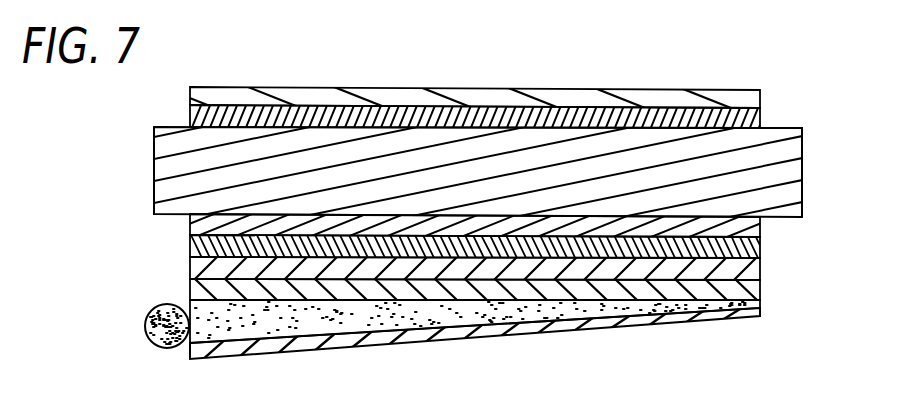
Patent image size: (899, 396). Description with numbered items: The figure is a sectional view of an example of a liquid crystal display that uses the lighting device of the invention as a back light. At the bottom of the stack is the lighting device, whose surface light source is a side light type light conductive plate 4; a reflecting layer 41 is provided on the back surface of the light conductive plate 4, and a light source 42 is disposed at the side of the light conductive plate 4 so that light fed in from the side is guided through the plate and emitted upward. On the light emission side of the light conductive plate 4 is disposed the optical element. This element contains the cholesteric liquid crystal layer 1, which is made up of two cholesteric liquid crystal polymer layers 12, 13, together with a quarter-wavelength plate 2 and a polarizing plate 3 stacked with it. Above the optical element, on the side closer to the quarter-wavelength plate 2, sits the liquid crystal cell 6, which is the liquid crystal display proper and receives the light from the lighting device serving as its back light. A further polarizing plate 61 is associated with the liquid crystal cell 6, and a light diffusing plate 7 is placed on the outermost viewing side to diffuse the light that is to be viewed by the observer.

The cholesteric liquid crystal layer 1 is at (515, 282).
The cholesteric liquid crystal polymer layer 12 is at (747, 272).
The cholesteric liquid crystal polymer layer 13 is at (833, 247).
The quarter-wavelength plate 2 is at (767, 238).
The polarizing plate 3 is at (770, 223).
The light conductive plate 4 is at (468, 320).
The reflecting layer 41 is at (567, 323).
The light source 42 is at (145, 325).
The liquid crystal cell 6 is at (788, 158).
The polarizing plate 61 is at (747, 122).
The light diffusing plate 7 is at (750, 102).